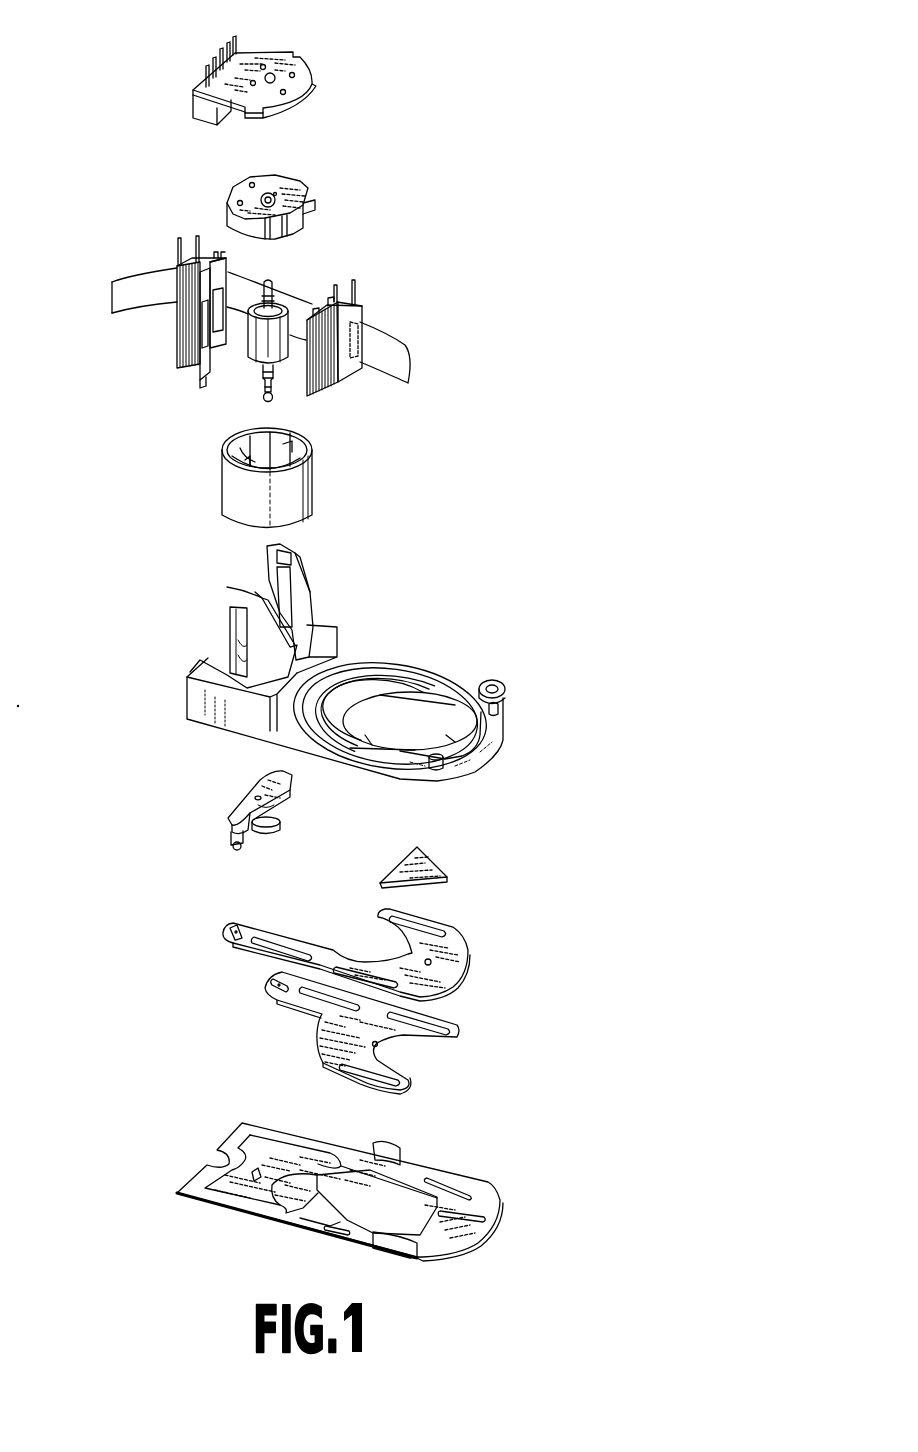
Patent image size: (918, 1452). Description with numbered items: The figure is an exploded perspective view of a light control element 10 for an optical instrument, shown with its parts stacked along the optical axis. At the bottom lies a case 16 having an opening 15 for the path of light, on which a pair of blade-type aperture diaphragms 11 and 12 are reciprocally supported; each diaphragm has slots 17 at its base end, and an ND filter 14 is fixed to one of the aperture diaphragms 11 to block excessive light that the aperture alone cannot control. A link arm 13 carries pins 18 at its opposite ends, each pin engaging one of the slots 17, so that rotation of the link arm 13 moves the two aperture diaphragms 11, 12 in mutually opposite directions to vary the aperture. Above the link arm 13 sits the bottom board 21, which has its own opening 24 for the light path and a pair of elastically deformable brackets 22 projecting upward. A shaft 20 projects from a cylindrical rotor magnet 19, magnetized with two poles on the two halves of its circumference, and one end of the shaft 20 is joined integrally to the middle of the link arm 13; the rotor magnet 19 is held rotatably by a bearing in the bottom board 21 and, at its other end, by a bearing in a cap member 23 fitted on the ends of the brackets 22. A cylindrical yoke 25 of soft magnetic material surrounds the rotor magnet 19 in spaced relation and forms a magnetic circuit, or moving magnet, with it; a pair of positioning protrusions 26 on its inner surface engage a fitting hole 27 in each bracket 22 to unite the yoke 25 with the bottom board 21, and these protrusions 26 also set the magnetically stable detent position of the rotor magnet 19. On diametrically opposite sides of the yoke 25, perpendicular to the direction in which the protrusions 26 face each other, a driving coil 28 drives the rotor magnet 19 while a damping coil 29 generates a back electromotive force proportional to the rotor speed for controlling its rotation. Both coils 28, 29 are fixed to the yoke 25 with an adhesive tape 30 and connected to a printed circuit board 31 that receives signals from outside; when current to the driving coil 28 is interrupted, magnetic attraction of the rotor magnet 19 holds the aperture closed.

The light control element 10 is at (515, 271).
The aperture diaphragm 11 is at (462, 953).
The aperture diaphragm 12 is at (317, 1051).
The link arm 13 is at (244, 796).
The ND filter 14 is at (430, 856).
The opening 15 is at (394, 1213).
The case 16 is at (310, 1219).
The slots 17 is at (230, 929).
The pins 18 is at (283, 799).
The rotor magnet 19 is at (253, 354).
The shaft 20 is at (260, 394).
The bottom board 21 is at (190, 697).
The brackets 22 is at (221, 609).
The cap member 23 is at (291, 184).
The opening 24 is at (405, 722).
The yoke 25 is at (300, 492).
The positioning protrusions 26 is at (247, 455).
The fitting hole 27 is at (280, 573).
The driving coil 28 is at (178, 329).
The damping coil 29 is at (347, 380).
The adhesive tape 30 is at (388, 340).
The printed circuit board 31 is at (302, 67).